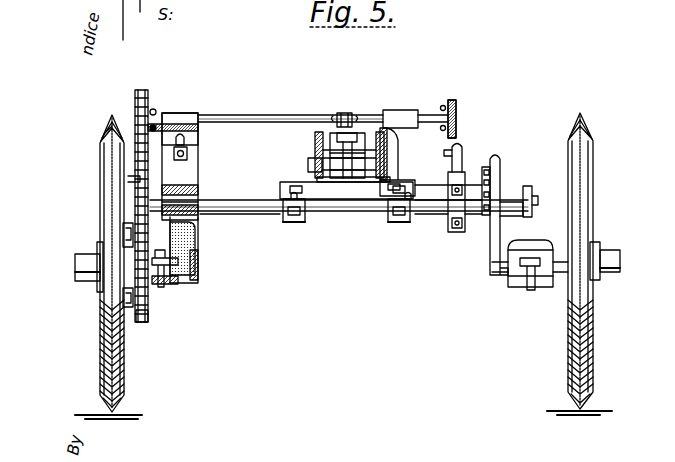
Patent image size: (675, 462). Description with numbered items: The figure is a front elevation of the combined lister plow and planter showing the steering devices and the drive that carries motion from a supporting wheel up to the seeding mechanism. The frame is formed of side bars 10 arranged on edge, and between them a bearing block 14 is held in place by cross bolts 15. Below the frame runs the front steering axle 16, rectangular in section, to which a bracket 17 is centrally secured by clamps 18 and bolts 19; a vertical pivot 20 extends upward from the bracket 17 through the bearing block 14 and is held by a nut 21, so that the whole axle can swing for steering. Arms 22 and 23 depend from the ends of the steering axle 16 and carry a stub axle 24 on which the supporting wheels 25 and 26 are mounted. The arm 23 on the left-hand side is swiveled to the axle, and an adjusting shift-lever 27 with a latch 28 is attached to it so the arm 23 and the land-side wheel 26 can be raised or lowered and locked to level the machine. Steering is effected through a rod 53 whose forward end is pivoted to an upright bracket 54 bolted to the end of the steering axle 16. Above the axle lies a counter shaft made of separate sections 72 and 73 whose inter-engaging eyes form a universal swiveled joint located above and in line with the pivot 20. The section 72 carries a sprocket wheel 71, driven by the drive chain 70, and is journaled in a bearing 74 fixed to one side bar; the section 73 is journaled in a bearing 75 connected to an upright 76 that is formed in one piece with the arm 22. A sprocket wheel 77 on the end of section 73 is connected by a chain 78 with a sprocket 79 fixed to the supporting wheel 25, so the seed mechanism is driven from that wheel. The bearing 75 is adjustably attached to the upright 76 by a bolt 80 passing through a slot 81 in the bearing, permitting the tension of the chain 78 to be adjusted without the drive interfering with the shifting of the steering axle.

The side bars 10 is at (312, 135).
The bearing block 14 is at (315, 151).
The cross bolts 15 is at (308, 166).
The front steering axle 16 is at (250, 212).
The bracket 17 is at (345, 194).
The clamps 18 is at (300, 223).
The bolts 19 is at (292, 213).
The vertical pivot 20 is at (348, 117).
The nut 21 is at (342, 146).
The arm 22 is at (193, 253).
The arm 23 is at (502, 232).
The stub axle 24 is at (86, 280).
The supporting wheel 25 is at (122, 377).
The supporting wheel 26 is at (590, 350).
The adjusting shift-lever 27 is at (500, 165).
The latch 28 is at (489, 167).
The rod 53 is at (462, 150).
The upright bracket 54 is at (448, 180).
The drive chain 70 is at (452, 100).
The sprocket wheel 71 is at (457, 125).
The shaft section 72 is at (390, 112).
The shaft section 73 is at (262, 115).
The bearing 74 is at (428, 116).
The bearing 75 is at (183, 118).
The upright 76 is at (192, 177).
The sprocket wheel 77 is at (143, 92).
The chain 78 is at (140, 179).
The sprocket 79 is at (148, 322).
The bolt 80 is at (188, 153).
The slot 81 is at (184, 138).